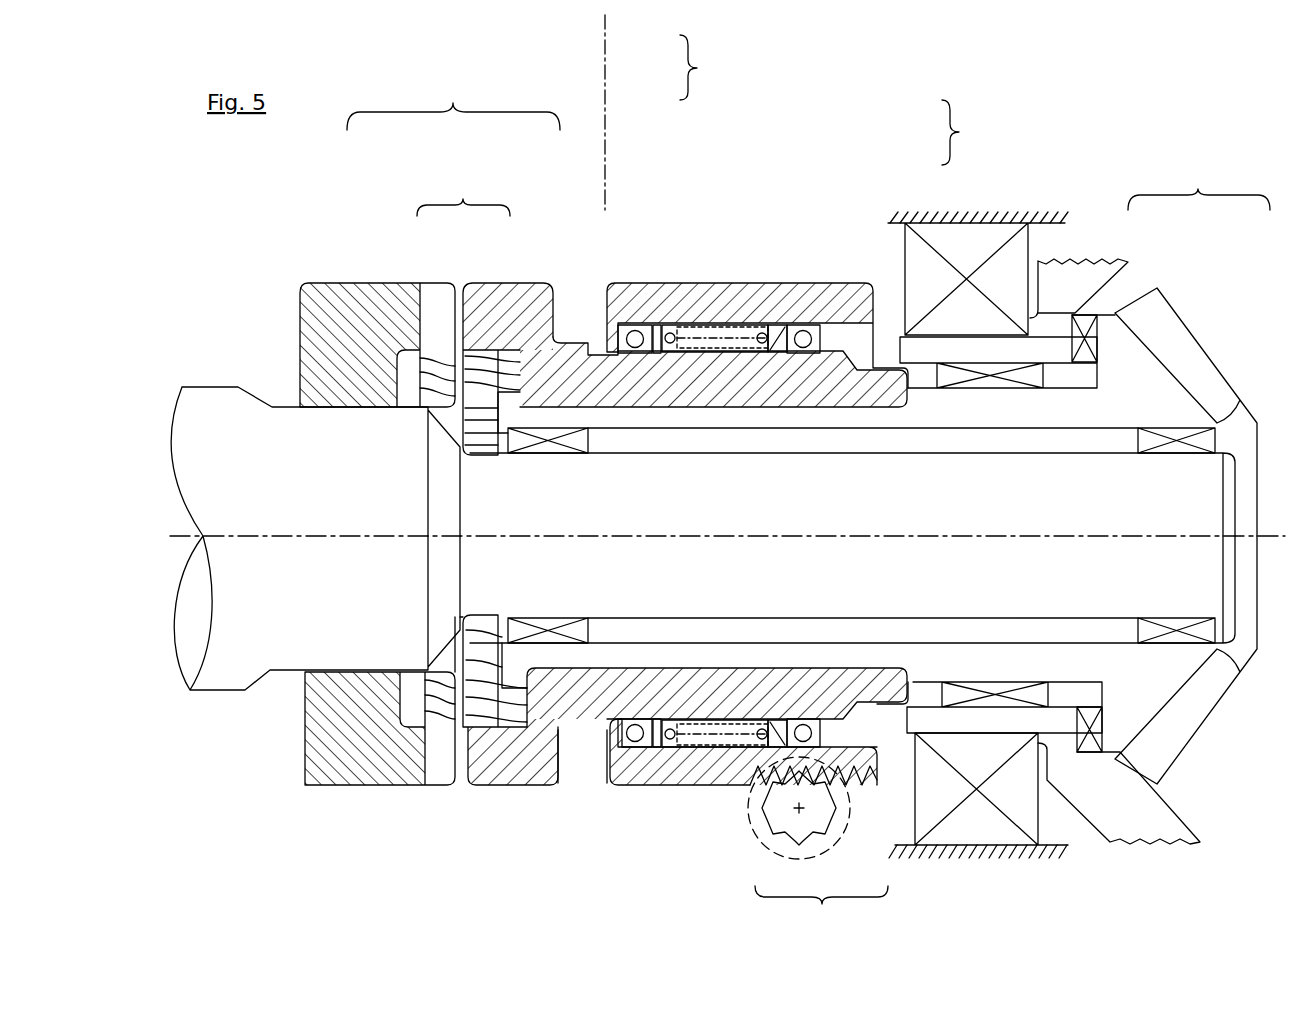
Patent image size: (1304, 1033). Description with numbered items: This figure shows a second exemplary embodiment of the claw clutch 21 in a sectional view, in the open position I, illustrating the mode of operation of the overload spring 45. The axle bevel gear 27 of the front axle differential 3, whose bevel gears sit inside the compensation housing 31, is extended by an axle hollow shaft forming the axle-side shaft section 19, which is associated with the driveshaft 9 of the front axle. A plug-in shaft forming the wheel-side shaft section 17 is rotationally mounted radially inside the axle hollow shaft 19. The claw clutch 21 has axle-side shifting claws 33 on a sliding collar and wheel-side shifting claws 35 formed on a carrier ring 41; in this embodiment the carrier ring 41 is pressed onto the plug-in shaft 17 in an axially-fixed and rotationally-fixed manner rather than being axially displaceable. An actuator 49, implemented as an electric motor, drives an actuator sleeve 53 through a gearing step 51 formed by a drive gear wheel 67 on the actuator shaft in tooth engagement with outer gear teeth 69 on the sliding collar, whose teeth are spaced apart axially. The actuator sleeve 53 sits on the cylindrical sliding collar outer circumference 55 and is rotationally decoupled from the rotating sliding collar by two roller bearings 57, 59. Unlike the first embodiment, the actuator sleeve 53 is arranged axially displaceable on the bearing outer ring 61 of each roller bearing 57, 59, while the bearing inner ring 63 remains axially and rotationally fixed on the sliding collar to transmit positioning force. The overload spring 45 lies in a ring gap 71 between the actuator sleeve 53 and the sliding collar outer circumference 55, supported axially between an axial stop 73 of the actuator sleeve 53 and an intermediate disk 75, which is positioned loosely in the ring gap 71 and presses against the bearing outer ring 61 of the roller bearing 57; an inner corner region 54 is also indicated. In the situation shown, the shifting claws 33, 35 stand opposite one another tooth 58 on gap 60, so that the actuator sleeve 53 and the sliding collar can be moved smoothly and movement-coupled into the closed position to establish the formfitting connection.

The open position I is at (603, 68).
The front axle differential 3 is at (1079, 510).
The driveshaft of the front axle 9 is at (453, 101).
The wheel-side shaft section 17 is at (335, 470).
The axle-side shaft section 19 is at (595, 420).
The claw clutch 21 is at (463, 196).
The axle bevel gear 27 is at (1175, 308).
The compensation housing 31 is at (1080, 307).
The axle-side shifting claws 33 is at (495, 283).
The wheel-side shifting claws 35 is at (402, 282).
The carrier ring 41 is at (298, 345).
The overload spring 45 is at (705, 323).
The actuator 49 is at (752, 823).
The gearing step 51 is at (821, 906).
The actuator sleeve 53 is at (740, 283).
The inner corner region 54 is at (577, 745).
The cylindrical sliding collar outer circumference 55 is at (603, 730).
The roller bearing 57 is at (702, 67).
The tooth 58 is at (513, 765).
The roller bearing 59 is at (966, 132).
The gap 60 is at (438, 762).
The bearing outer ring 61 is at (622, 321).
The bearing inner ring 63 is at (590, 345).
The drive gear wheel 67 is at (800, 843).
The outer gear teeth 69 is at (875, 755).
The ring gap 71 is at (710, 735).
The axial stop 73 is at (778, 328).
The intermediate disk 75 is at (657, 321).